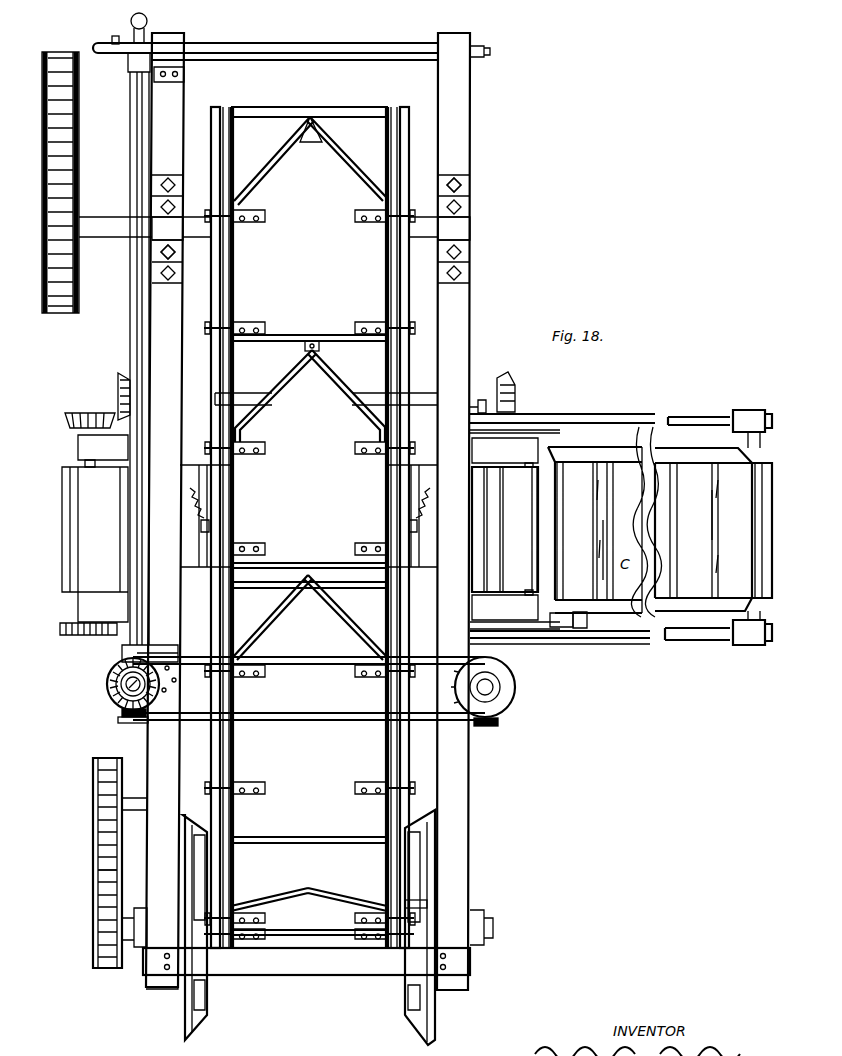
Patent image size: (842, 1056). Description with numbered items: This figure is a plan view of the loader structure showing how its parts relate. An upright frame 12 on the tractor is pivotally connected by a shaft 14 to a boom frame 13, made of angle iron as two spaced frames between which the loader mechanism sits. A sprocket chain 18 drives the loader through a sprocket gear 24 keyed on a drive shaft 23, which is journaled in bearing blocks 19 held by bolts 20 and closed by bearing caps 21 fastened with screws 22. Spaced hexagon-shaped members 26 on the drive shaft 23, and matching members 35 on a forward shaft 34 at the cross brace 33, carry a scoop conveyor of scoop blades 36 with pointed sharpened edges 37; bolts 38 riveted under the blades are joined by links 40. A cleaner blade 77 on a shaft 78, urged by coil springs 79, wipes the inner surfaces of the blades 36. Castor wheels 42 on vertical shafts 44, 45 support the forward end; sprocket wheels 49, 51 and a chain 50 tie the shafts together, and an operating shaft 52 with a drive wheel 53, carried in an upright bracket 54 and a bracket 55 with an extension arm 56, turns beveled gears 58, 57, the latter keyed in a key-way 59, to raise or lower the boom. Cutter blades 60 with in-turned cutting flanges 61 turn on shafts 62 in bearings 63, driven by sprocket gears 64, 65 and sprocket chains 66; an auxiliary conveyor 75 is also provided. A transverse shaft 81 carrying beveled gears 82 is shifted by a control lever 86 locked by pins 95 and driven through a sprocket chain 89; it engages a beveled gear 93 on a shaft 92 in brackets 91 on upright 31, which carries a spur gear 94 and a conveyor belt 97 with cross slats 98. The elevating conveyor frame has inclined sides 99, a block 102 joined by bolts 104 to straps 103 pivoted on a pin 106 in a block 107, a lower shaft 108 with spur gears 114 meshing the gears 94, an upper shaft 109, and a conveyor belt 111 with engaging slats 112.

The upright frame 12 is at (151, 35).
The boom frame 13 is at (308, 511).
The shaft 14 is at (318, 52).
The sprocket chain 18 is at (58, 313).
The bearing block 19 is at (177, 187).
The bolt 20 is at (463, 187).
The bearing cap 21 is at (311, 228).
The screw 22 is at (177, 252).
The drive shaft 23 is at (95, 237).
The sprocket gear 24 is at (80, 198).
The hexagon-shaped member 26 is at (395, 107).
The upright 31 is at (311, 129).
The cross brace 33 is at (306, 969).
The shaft 34 is at (192, 792).
The hexagon-shaped member 35 is at (403, 742).
The scoop blade 36 is at (309, 527).
The pointed sharpened edge 37 is at (315, 144).
The bolt 38 is at (352, 549).
The link 40 is at (409, 154).
The castor wheel 42 is at (488, 727).
The vertical shaft 44 is at (490, 686).
The vertical shaft 45 is at (128, 718).
The sprocket wheel 49 is at (505, 700).
The chain 50 is at (305, 665).
The sprocket wheel 51 is at (110, 678).
The operating shaft 52 is at (138, 139).
The drive wheel 53 is at (115, 36).
The upright bracket 54 is at (188, 72).
The bracket 55 is at (157, 646).
The extension arm 56 is at (167, 677).
The beveled gear 57 is at (121, 690).
The beveled gear 58 is at (107, 672).
The key-way 59 is at (125, 695).
The cutter blade 60 is at (440, 832).
The in-turned cutting flange 61 is at (406, 862).
The shaft 62 is at (430, 905).
The bearing 63 is at (498, 935).
The sprocket gear 64 is at (110, 930).
The sprocket gear 65 is at (94, 797).
The sprocket chain 66 is at (103, 884).
The auxiliary conveyor 75 is at (376, 590).
The cleaner blade 77 is at (232, 532).
The shaft 78 is at (426, 530).
The coil spring 79 is at (204, 496).
The transverse shaft 81 is at (261, 395).
The beveled gear 82 is at (116, 395).
The control lever 86 is at (416, 405).
The sprocket chain 89 is at (320, 346).
The bracket 91 is at (308, 527).
The shaft 92 is at (89, 468).
The beveled gear 93 is at (72, 428).
The spur gear 94 is at (90, 636).
The pin 95 is at (483, 398).
The conveyor belt 97 is at (251, 543).
The cross slat 98 is at (122, 572).
The inclined side 99 is at (702, 568).
The block 102 is at (750, 411).
The strap 103 is at (697, 416).
The bolt 104 is at (698, 645).
The pin 106 is at (511, 413).
The block 107 is at (471, 624).
The lower shaft 108 is at (588, 620).
The upper shaft 109 is at (748, 440).
The conveyor belt 111 is at (657, 530).
The engaging slat 112 is at (745, 480).
The spur gear 114 is at (596, 643).